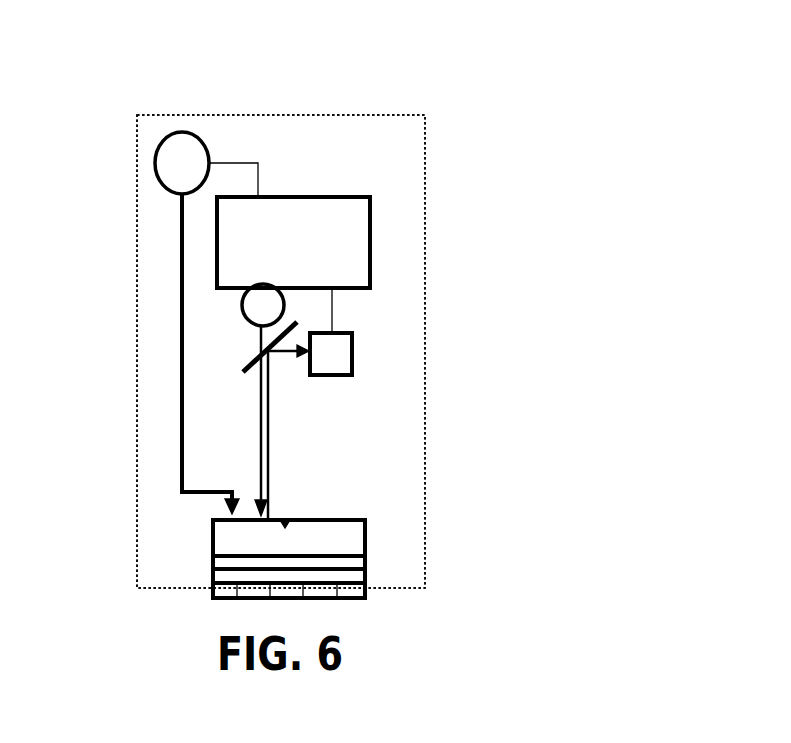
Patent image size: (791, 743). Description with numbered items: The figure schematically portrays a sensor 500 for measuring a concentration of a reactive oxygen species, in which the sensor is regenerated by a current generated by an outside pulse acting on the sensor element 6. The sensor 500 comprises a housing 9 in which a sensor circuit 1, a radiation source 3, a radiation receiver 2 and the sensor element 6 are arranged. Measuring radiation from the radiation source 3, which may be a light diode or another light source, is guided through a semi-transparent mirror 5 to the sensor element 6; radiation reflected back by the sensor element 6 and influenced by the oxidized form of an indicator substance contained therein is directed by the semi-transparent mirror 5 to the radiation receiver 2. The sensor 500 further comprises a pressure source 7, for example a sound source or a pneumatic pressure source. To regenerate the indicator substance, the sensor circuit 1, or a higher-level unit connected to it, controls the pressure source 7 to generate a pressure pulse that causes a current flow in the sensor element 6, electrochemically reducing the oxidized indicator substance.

The sensor 500 is at (395, 97).
The housing 9 is at (425, 355).
The pressure source 7 is at (206, 323).
The sensor circuit 1 is at (293, 265).
The radiation source 3 is at (263, 305).
The radiation receiver 2 is at (355, 351).
The semi-transparent mirror 5 is at (245, 352).
The sensor element 6 is at (385, 600).